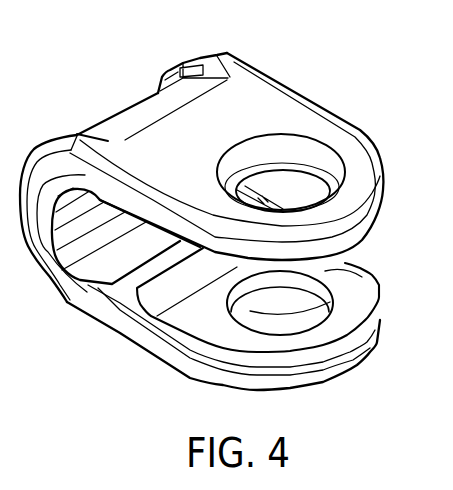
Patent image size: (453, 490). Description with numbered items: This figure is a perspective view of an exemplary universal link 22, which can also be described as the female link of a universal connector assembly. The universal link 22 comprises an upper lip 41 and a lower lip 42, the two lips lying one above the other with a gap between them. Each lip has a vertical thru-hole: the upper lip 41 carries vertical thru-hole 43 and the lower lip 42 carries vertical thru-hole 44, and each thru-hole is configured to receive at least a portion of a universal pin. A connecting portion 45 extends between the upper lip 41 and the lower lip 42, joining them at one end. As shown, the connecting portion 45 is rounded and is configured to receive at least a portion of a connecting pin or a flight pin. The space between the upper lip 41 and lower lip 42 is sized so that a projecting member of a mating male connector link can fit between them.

The universal link 22 is at (376, 86).
The upper lip 41 is at (365, 215).
The lower lip 42 is at (366, 343).
The vertical thru-hole 43 is at (277, 153).
The vertical thru-hole 44 is at (318, 305).
The connecting portion 45 is at (87, 240).